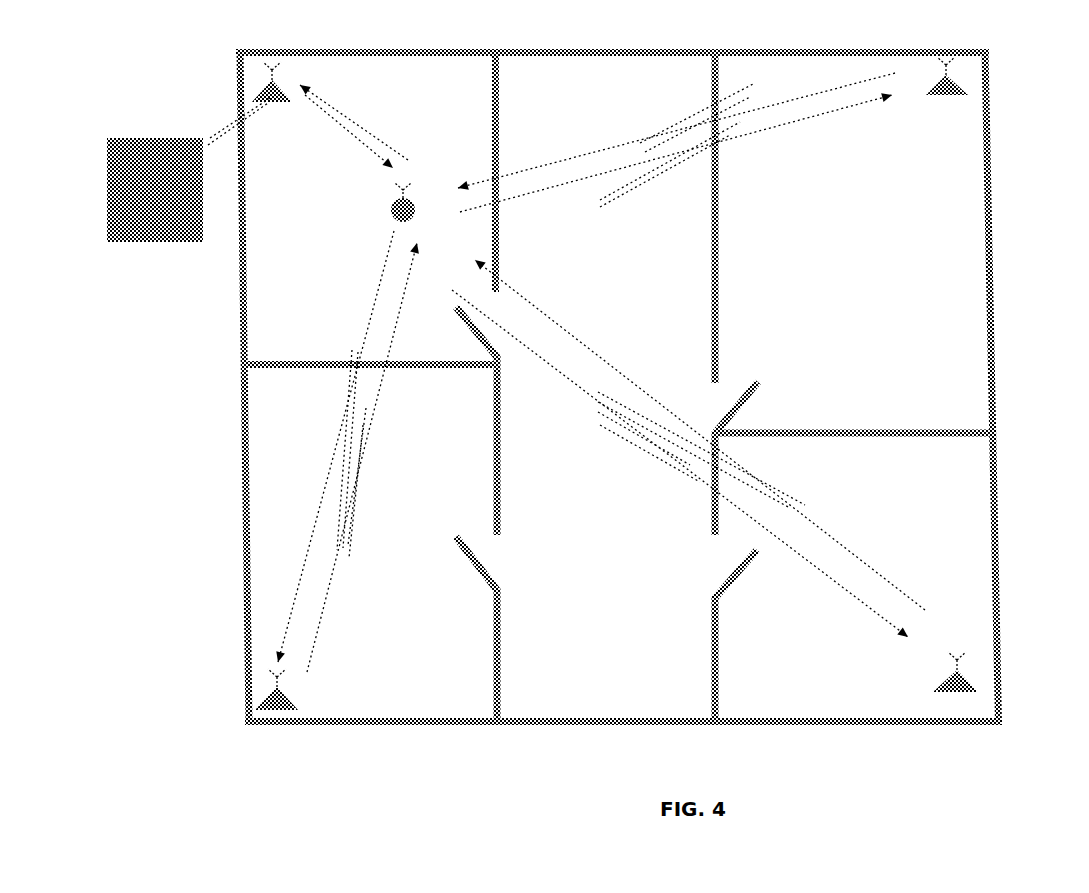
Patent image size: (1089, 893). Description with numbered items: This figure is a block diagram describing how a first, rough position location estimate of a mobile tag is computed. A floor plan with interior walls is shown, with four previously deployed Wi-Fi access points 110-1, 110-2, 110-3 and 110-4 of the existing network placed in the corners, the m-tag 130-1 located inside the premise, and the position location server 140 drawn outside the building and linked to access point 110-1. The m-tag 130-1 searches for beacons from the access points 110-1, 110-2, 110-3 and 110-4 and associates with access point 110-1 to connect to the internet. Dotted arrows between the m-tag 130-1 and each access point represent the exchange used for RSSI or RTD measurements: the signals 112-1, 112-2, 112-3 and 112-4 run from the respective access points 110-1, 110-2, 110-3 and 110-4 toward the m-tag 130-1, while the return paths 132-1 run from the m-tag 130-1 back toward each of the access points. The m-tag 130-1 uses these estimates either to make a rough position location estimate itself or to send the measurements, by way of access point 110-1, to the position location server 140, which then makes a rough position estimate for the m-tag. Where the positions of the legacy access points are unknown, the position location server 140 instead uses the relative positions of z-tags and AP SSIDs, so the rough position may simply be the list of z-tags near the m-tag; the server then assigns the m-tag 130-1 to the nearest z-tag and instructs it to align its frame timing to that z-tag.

The access point 110-1 is at (254, 95).
The access point 110-2 is at (937, 83).
The access point 110-3 is at (268, 697).
The access point 110-4 is at (973, 682).
The position location server 140 is at (183, 139).
The m-tag 130-1 is at (417, 220).
The ranging signal from access point 112-1 is at (349, 131).
The ranging signal from access point 112-2 is at (676, 140).
The ranging signal from access point 112-3 is at (363, 457).
The ranging signal from access point 112-4 is at (680, 463).
The response signal from mobile device 132-1 is at (600, 373).